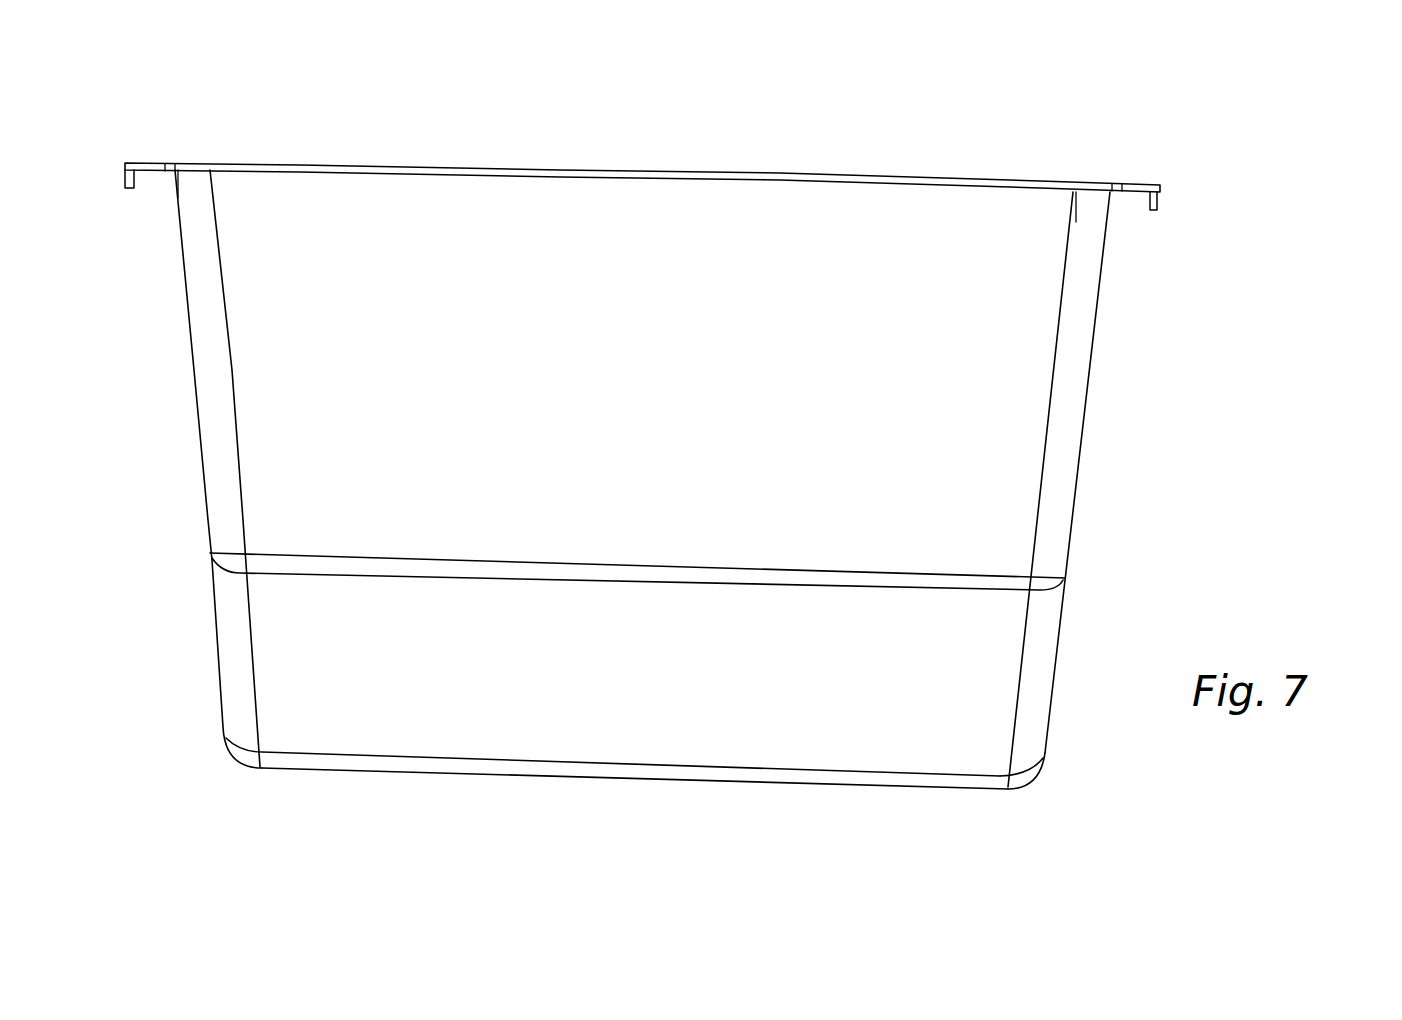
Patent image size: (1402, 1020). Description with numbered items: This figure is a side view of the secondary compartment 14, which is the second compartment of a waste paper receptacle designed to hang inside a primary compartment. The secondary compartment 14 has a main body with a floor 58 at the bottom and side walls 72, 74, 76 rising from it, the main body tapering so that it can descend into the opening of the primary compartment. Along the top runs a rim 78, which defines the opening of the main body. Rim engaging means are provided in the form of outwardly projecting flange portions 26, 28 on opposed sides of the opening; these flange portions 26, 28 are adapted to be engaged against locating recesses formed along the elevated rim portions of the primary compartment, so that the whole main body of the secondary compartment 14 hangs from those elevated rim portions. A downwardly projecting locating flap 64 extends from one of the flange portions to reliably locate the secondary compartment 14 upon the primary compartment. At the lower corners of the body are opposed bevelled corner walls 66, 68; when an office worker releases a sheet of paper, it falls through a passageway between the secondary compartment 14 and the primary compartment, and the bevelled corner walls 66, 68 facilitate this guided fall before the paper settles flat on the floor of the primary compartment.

The secondary compartment 14 is at (1247, 545).
The rim 78 is at (648, 178).
The flange portion 28 is at (158, 163).
The flange portion 26 is at (1135, 183).
The locating flap 64 is at (127, 178).
The bevelled corner wall 66 is at (1158, 199).
The side wall 76 is at (197, 410).
The side wall 74 is at (1085, 382).
The side wall 72 is at (1012, 448).
The bevelled corner wall 68 is at (1000, 725).
The floor 58 is at (722, 780).